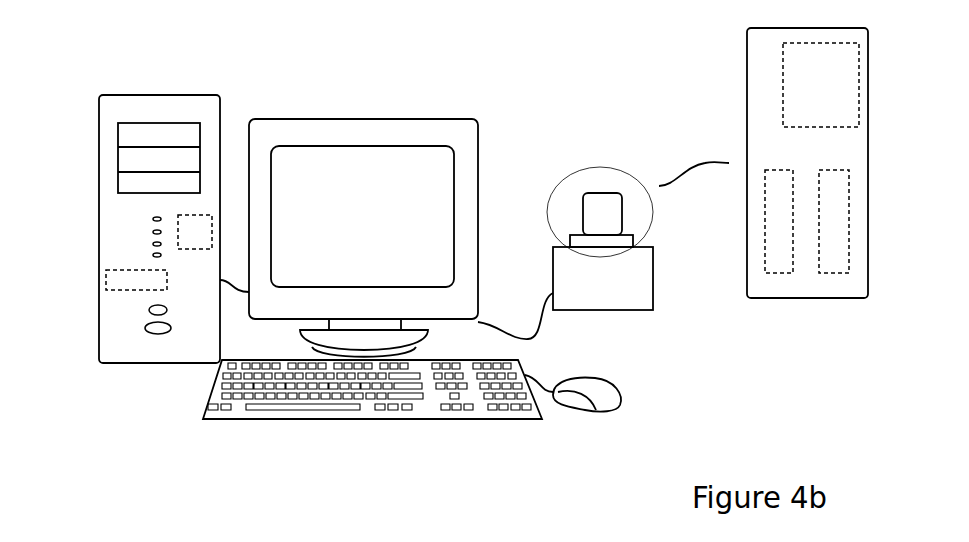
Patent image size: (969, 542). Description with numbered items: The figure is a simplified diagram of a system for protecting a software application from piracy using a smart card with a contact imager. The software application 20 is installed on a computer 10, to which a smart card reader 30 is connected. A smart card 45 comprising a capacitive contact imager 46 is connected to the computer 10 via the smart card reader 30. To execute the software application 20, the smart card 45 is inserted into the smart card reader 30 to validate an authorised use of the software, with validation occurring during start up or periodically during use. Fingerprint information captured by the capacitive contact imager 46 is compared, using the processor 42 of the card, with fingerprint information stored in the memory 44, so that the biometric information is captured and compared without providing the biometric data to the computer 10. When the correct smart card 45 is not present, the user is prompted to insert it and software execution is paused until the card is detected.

The computer 10 is at (112, 92).
The software application 20 is at (110, 272).
The smart card reader 30 is at (620, 311).
The processor 42 is at (791, 274).
The memory 44 is at (847, 274).
The smart card 45 is at (586, 193).
The capacitive contact imager 46 is at (783, 76).